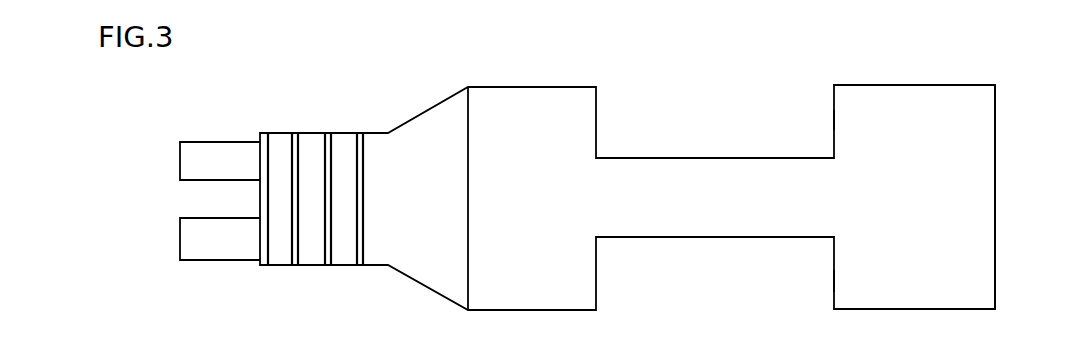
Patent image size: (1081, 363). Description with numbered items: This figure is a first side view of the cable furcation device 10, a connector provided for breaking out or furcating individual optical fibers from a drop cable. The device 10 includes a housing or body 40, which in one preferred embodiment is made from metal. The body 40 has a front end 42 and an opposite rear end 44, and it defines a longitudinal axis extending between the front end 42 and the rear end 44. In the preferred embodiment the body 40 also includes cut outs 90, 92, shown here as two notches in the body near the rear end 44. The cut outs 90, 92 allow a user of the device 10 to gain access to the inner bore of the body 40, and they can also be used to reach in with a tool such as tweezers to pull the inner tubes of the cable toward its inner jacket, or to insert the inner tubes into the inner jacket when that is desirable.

The cable furcation device 10 is at (286, 87).
The front end 42 is at (180, 131).
The body 40 is at (538, 85).
The cut out 92 is at (833, 122).
The cut out 90 is at (833, 282).
The rear end 44 is at (995, 151).